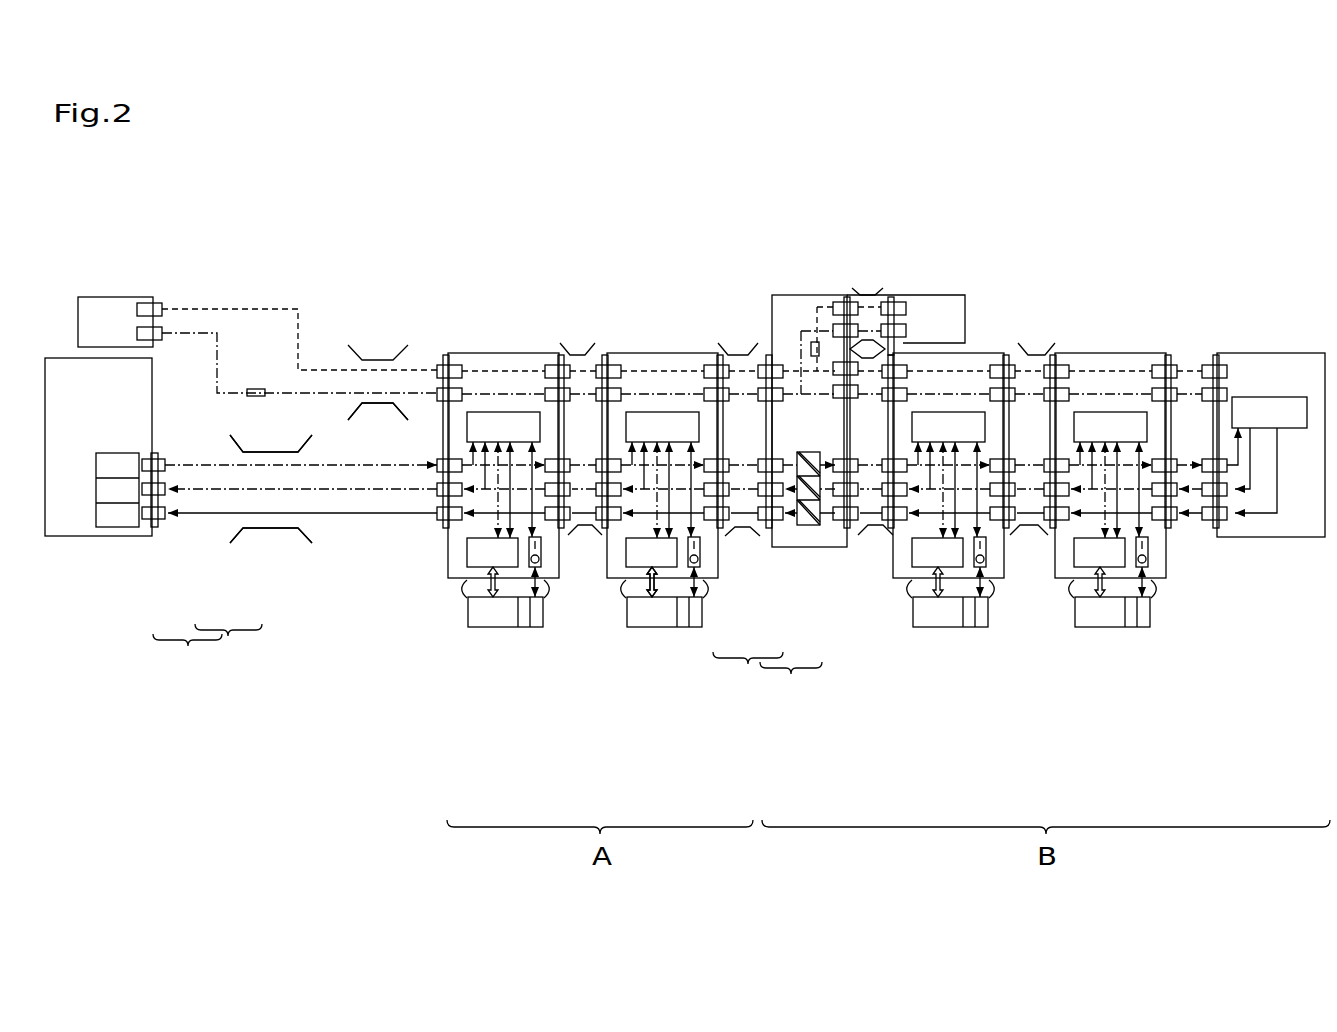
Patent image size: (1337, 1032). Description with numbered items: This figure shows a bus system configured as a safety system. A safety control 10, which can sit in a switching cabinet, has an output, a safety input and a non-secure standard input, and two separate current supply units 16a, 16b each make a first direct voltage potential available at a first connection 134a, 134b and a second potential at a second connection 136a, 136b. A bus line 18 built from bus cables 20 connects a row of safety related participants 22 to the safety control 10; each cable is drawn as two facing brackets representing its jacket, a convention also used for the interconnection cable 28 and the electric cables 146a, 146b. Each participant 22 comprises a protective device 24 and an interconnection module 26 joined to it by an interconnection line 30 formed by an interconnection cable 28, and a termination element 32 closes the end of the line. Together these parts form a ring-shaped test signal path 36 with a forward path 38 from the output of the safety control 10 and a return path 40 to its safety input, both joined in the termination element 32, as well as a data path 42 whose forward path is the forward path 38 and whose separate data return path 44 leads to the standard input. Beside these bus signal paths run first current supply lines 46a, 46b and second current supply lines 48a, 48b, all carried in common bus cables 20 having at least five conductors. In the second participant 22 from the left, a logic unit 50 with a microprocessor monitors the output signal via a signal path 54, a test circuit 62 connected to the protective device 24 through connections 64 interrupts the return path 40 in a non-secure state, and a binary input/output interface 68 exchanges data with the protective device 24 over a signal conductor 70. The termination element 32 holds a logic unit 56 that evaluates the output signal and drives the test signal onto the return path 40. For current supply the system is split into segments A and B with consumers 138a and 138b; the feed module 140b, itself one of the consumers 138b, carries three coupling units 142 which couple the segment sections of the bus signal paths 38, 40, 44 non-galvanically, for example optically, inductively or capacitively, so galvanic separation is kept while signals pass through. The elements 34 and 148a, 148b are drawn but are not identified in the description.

The safety control 10 is at (87, 537).
The current supply unit 16a is at (90, 297).
The current supply unit 16b is at (922, 296).
The bus line 18 is at (566, 348).
The bus cable 20 is at (290, 528).
The safety related participant 22 is at (508, 200).
The protective device 24 is at (495, 630).
The interconnection module 26 is at (475, 352).
The interconnection cable 28 is at (627, 570).
The interconnection line 30 is at (601, 605).
The termination element 32 is at (1300, 537).
The plug connector 34 is at (155, 343).
The test signal path 36 is at (468, 663).
The forward path 38 is at (443, 457).
The return path 40 is at (189, 515).
The data path 42 is at (508, 665).
The data return path 44 is at (230, 490).
The first current supply line 46a is at (243, 308).
The first current supply line 46b is at (1180, 366).
The second current supply line 48a is at (205, 330).
The second current supply line 48b is at (1195, 392).
The logic unit 50 is at (652, 412).
The signal path 54 is at (638, 456).
The logic unit 56 is at (1285, 397).
The test circuit 62 is at (626, 540).
The connections 64 is at (648, 582).
The input/output interface 68 is at (700, 540).
The signal conductor 70 is at (690, 578).
The first connection 134a is at (152, 303).
The first connection 134b is at (900, 302).
The second connection 136a is at (163, 327).
The second connection 136b is at (906, 328).
The consumer 138a is at (513, 742).
The consumer 138b is at (817, 742).
The feed module 140b is at (800, 296).
The coupling unit 142 is at (822, 472).
The electric cable 146a is at (377, 358).
The electric cable 146b is at (868, 290).
The terminating element 148a is at (257, 389).
The terminating element 148b is at (809, 342).